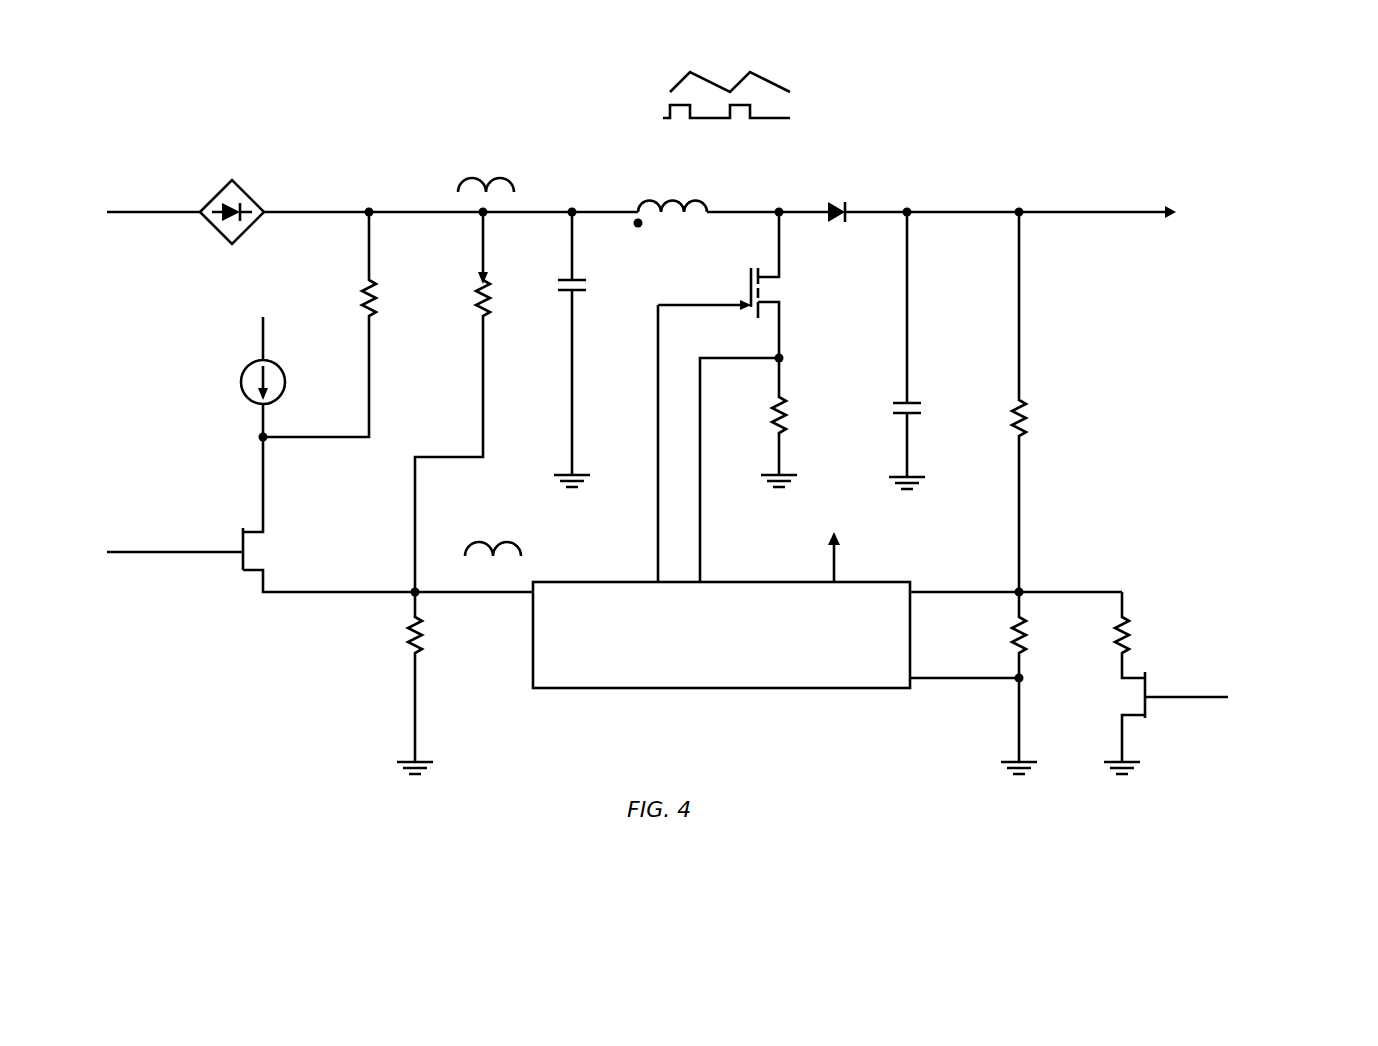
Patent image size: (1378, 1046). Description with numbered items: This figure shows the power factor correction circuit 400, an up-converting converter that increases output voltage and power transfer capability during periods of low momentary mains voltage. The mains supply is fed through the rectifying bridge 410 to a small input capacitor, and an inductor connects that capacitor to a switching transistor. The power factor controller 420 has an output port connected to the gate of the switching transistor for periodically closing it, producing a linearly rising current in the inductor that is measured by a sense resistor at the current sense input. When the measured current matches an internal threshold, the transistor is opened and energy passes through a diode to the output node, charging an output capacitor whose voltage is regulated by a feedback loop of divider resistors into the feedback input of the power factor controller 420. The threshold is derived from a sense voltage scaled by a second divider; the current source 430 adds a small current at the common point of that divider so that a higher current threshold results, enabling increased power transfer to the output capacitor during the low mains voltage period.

The power factor correction circuit 400 is at (387, 142).
The rectifying bridge 410 is at (232, 180).
The power factor controller 420 is at (560, 688).
The current source 430 is at (285, 382).